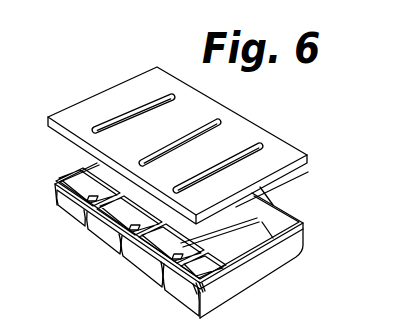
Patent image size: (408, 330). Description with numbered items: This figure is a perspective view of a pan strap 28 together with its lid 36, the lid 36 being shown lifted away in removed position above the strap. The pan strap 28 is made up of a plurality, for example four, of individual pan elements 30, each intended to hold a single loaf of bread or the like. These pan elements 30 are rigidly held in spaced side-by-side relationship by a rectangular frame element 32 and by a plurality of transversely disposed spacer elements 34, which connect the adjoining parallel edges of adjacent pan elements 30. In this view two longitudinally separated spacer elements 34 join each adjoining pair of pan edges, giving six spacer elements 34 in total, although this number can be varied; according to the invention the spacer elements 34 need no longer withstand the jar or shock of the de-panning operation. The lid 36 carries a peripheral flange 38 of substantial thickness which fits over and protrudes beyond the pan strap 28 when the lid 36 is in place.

The lid 36 is at (258, 134).
The peripheral flange 38 is at (308, 170).
The pan element 30 is at (263, 222).
The rectangular frame element 32 is at (257, 262).
The spacer element 34 is at (118, 228).
The pan strap 28 is at (124, 273).